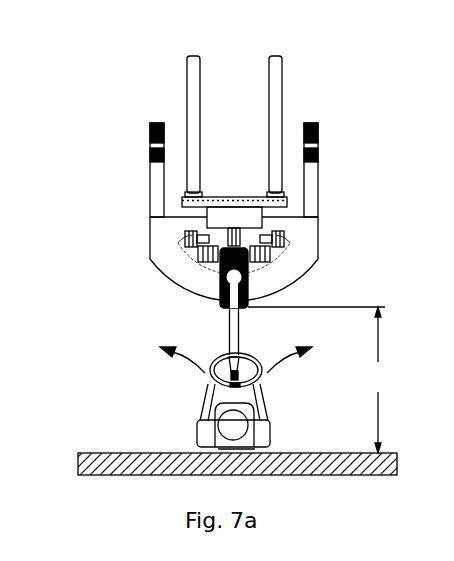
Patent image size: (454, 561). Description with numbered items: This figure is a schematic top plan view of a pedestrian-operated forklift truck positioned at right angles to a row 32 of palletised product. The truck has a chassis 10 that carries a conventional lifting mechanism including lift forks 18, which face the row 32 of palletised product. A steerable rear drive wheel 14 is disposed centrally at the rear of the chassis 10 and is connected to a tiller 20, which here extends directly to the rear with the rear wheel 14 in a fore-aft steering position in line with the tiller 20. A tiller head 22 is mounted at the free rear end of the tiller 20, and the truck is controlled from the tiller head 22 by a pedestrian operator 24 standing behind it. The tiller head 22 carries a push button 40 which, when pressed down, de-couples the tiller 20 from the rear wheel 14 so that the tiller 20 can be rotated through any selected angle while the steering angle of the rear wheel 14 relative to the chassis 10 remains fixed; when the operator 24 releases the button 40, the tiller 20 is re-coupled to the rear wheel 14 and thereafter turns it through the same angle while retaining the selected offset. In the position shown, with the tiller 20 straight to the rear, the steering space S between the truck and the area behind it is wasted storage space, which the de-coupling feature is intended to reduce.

The chassis 10 is at (313, 238).
The rear drive wheel 14 is at (250, 279).
The lift forks 18 is at (268, 122).
The tiller 20 is at (240, 340).
The tiller head 22 is at (210, 378).
The pedestrian operator 24 is at (267, 427).
The row of palletised product 32 is at (112, 453).
The push button 40 is at (240, 378).
The steering space S is at (316, 380).